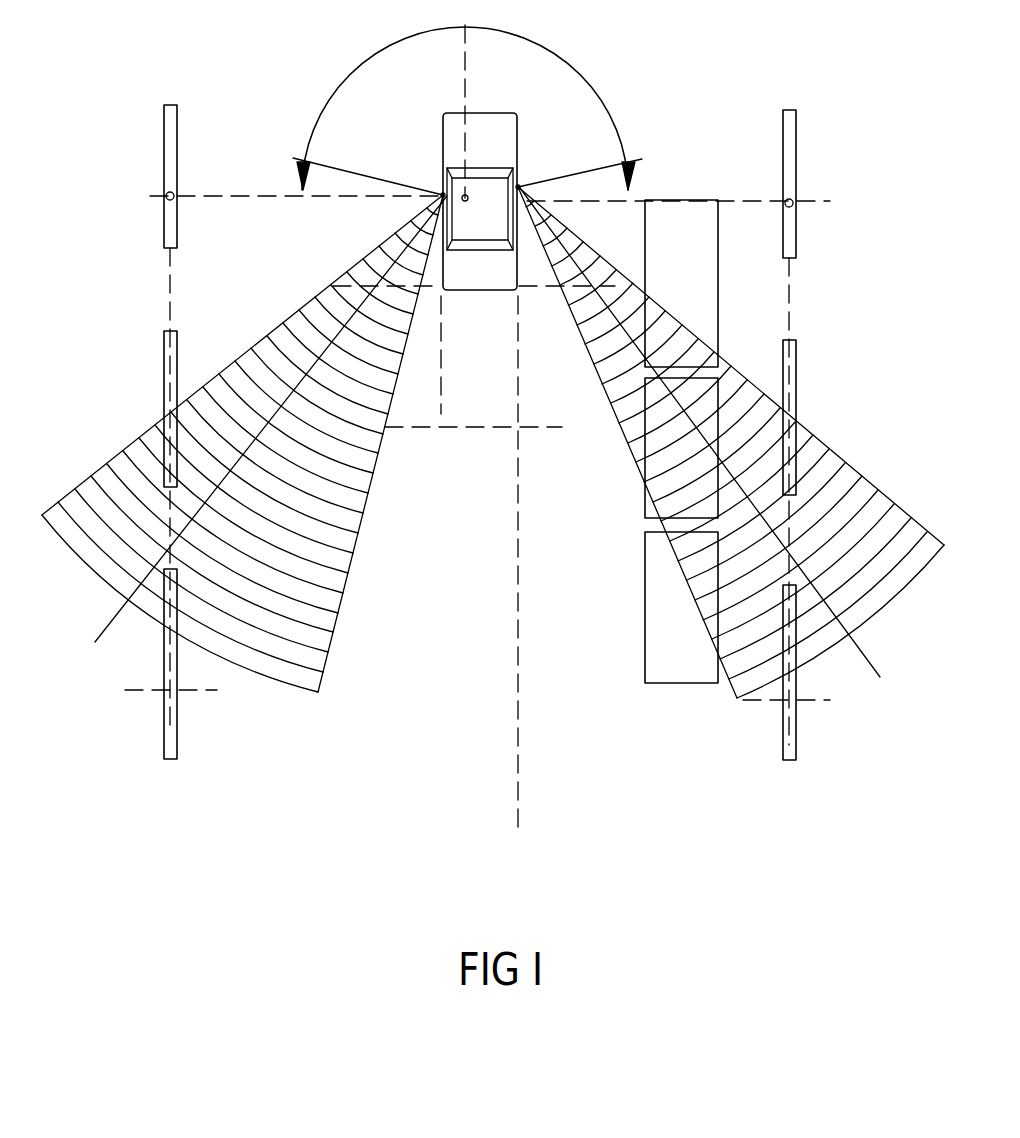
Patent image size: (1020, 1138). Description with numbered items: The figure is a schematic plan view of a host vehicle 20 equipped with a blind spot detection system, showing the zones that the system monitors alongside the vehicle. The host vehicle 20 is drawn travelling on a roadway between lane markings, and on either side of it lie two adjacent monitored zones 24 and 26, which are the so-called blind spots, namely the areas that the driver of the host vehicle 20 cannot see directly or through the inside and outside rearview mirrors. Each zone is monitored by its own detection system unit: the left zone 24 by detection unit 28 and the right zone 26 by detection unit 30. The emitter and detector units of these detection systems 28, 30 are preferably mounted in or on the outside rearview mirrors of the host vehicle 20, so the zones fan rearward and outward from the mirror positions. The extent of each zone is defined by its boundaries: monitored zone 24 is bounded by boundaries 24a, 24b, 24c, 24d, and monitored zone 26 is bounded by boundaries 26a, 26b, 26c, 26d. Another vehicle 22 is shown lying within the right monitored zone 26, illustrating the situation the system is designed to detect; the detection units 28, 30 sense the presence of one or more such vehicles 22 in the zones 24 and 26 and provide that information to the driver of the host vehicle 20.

The host vehicle 20 is at (514, 120).
The vehicle 22 is at (718, 535).
The monitored zone 24 is at (130, 556).
The boundary of monitored zone 24a is at (386, 254).
The boundary of monitored zone 24b is at (258, 343).
The boundary of monitored zone 24c is at (292, 682).
The boundary of monitored zone 24d is at (363, 514).
The monitored zone 26 is at (867, 617).
The boundary of monitored zone 26a is at (568, 232).
The boundary of monitored zone 26b is at (833, 440).
The boundary of monitored zone 26c is at (828, 643).
The boundary of monitored zone 26d is at (648, 520).
The detection system unit 28 is at (443, 193).
The detection system unit 30 is at (518, 186).